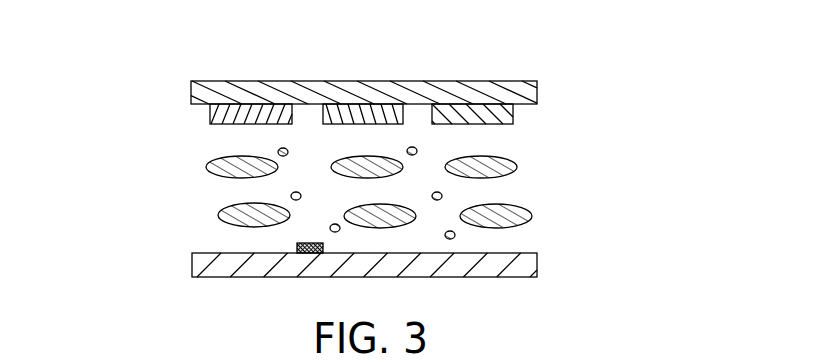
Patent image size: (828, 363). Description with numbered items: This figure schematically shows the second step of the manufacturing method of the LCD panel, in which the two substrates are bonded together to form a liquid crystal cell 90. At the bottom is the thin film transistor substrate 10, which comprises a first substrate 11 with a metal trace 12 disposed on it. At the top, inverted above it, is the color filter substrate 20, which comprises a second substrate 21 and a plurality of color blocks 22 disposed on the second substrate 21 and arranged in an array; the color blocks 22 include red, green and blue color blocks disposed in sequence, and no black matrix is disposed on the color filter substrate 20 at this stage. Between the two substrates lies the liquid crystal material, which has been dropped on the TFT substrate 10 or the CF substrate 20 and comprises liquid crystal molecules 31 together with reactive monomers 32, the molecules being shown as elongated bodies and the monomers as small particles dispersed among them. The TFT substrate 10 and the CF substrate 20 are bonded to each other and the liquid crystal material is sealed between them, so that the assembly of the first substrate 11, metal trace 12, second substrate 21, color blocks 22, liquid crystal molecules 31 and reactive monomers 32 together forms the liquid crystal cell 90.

The thin film transistor substrate 10 is at (431, 284).
The first substrate 11 is at (282, 266).
The metal trace 12 is at (297, 251).
The color filter substrate 20 is at (371, 66).
The second substrate 21 is at (241, 105).
The color blocks 22 is at (212, 115).
The liquid crystal molecules 31 is at (218, 213).
The reactive monomers 32 is at (278, 152).
The liquid crystal cell 90 is at (438, 81).